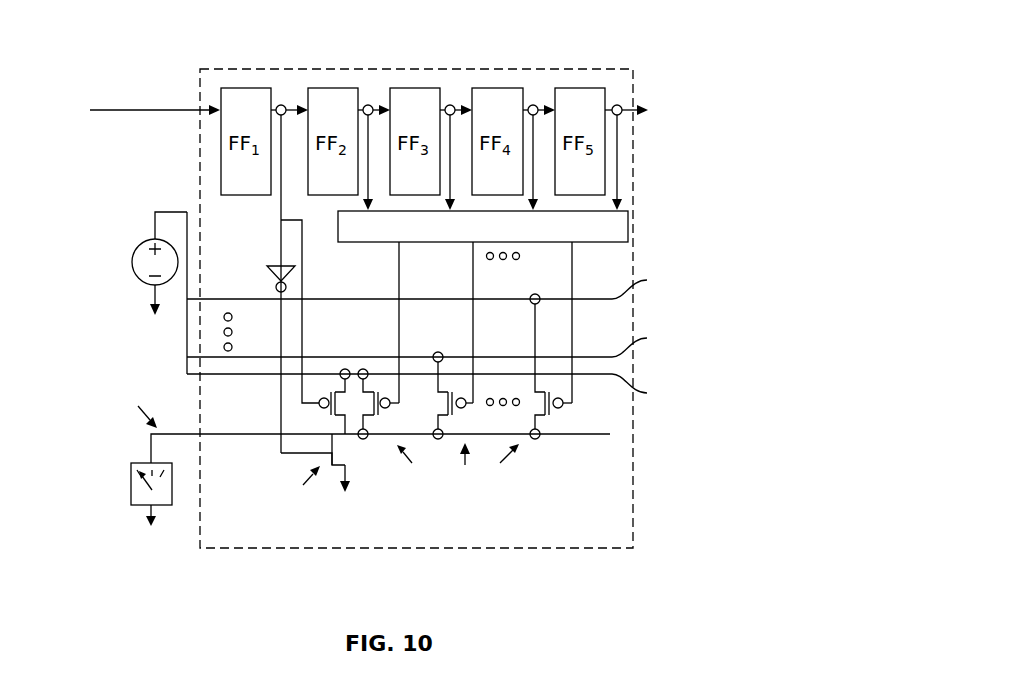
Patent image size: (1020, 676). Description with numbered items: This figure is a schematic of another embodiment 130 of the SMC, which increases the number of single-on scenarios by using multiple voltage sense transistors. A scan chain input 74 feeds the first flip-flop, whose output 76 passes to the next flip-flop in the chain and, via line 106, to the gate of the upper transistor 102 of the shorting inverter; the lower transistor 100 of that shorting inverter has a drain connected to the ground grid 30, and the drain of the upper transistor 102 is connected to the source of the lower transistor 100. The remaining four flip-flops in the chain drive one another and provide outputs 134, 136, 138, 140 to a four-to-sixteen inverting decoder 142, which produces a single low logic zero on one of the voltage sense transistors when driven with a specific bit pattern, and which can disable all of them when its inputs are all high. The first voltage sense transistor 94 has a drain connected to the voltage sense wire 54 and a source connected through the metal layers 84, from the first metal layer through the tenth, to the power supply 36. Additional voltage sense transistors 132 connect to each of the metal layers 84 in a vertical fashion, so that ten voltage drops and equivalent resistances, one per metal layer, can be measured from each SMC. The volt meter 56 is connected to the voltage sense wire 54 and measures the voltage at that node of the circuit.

The embodiment 130 is at (657, 38).
The scan chain input 74 is at (180, 108).
The output 76 is at (280, 105).
The output 134 is at (367, 105).
The output 136 is at (449, 105).
The output 138 is at (532, 105).
The output 140 is at (616, 105).
The 4-to-16 inverting decoder 142 is at (630, 234).
The metal layers 84 is at (430, 309).
The line 106 is at (302, 272).
The power supply 36 is at (140, 281).
The voltage sense wire 54 is at (182, 432).
The volt meter 56 is at (131, 465).
The upper transistor 102 is at (320, 413).
The first voltage sense transistor 94 is at (378, 415).
The voltage sense transistors 132 is at (452, 415).
The lower transistor 100 is at (333, 470).
The ground grid 30 is at (345, 494).